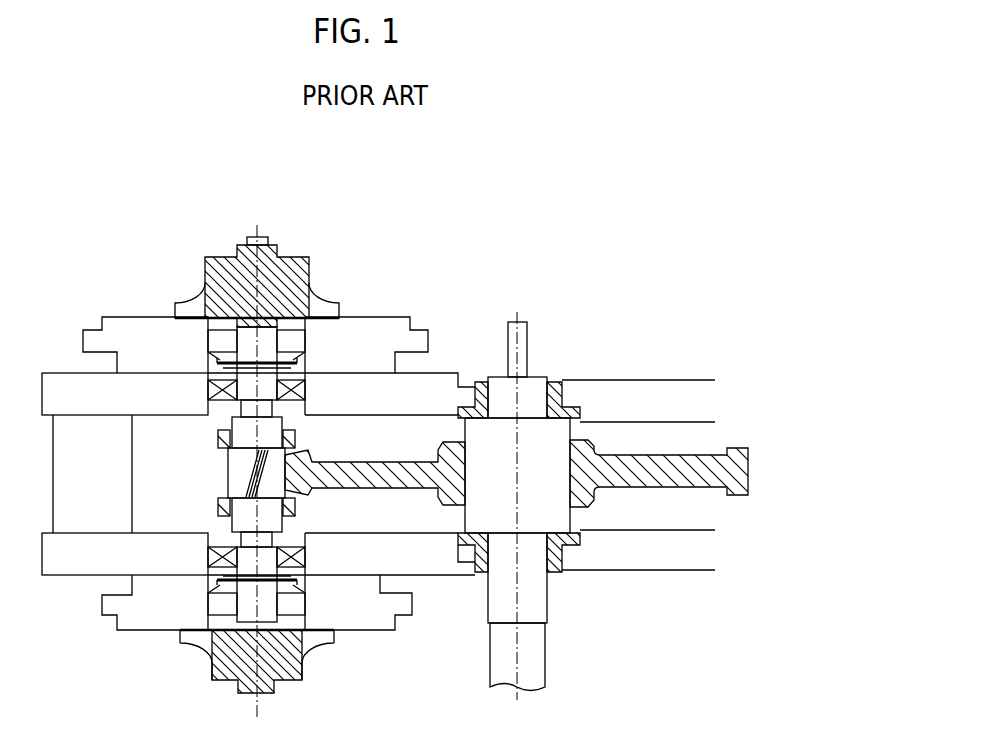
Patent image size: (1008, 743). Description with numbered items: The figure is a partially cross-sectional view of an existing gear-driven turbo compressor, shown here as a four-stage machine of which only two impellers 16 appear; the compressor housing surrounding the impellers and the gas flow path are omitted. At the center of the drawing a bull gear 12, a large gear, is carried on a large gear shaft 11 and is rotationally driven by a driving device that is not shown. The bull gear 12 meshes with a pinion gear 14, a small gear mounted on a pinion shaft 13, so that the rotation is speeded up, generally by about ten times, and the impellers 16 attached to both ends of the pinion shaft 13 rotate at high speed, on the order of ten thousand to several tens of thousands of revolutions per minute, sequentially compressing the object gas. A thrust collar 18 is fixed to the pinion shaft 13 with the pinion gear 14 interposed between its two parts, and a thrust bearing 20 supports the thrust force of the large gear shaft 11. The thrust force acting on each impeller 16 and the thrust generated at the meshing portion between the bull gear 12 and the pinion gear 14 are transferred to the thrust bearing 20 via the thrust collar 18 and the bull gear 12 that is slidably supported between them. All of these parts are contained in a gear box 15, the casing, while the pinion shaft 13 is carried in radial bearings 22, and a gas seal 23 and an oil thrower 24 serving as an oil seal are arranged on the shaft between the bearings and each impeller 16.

The large gear shaft 11 is at (552, 433).
The bull gear 12 is at (375, 472).
The pinion shaft 13 is at (248, 405).
The pinion gear 14 is at (282, 483).
The gear box 15 is at (100, 587).
The impeller 16 is at (230, 288).
The thrust collar 18 is at (218, 500).
The thrust bearing 20 is at (475, 383).
The radial bearing 22 is at (302, 388).
The gas seal 23 is at (293, 338).
The oil thrower 24 is at (208, 355).